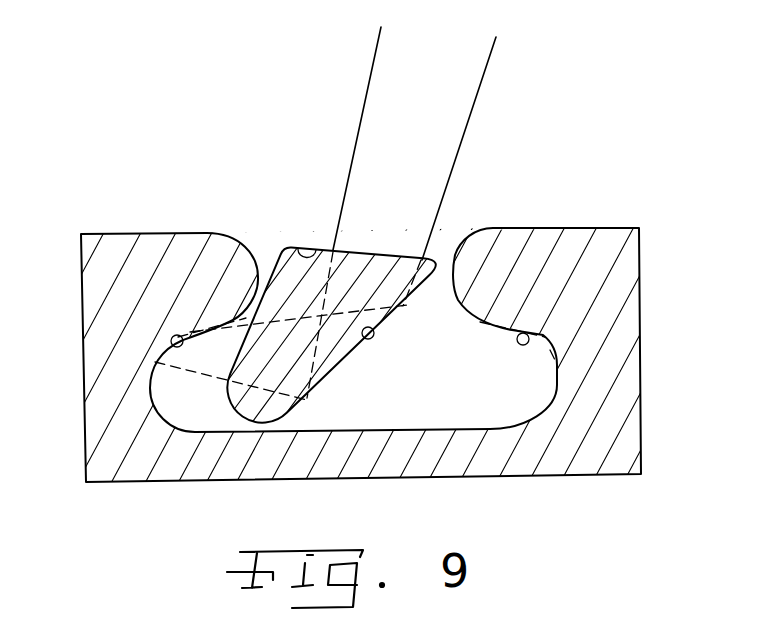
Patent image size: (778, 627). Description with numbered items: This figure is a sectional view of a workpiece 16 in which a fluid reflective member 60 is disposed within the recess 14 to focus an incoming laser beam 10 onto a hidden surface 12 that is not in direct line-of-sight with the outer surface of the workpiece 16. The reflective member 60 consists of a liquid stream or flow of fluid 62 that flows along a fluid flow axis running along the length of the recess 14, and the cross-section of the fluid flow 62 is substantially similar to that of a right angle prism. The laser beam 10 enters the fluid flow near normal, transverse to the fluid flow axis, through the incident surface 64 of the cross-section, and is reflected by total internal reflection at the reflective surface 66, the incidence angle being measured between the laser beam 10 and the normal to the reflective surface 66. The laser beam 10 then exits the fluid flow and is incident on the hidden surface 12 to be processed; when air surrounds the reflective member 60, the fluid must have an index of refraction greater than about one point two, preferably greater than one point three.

The laser beam 10 is at (452, 105).
The hidden surface 12 is at (172, 343).
The recess 14 is at (456, 230).
The workpiece 16 is at (623, 440).
The reflective member 60 is at (218, 402).
The fluid flow 62 is at (337, 353).
The incident surface 64 is at (300, 247).
The reflective surface 66 is at (371, 340).